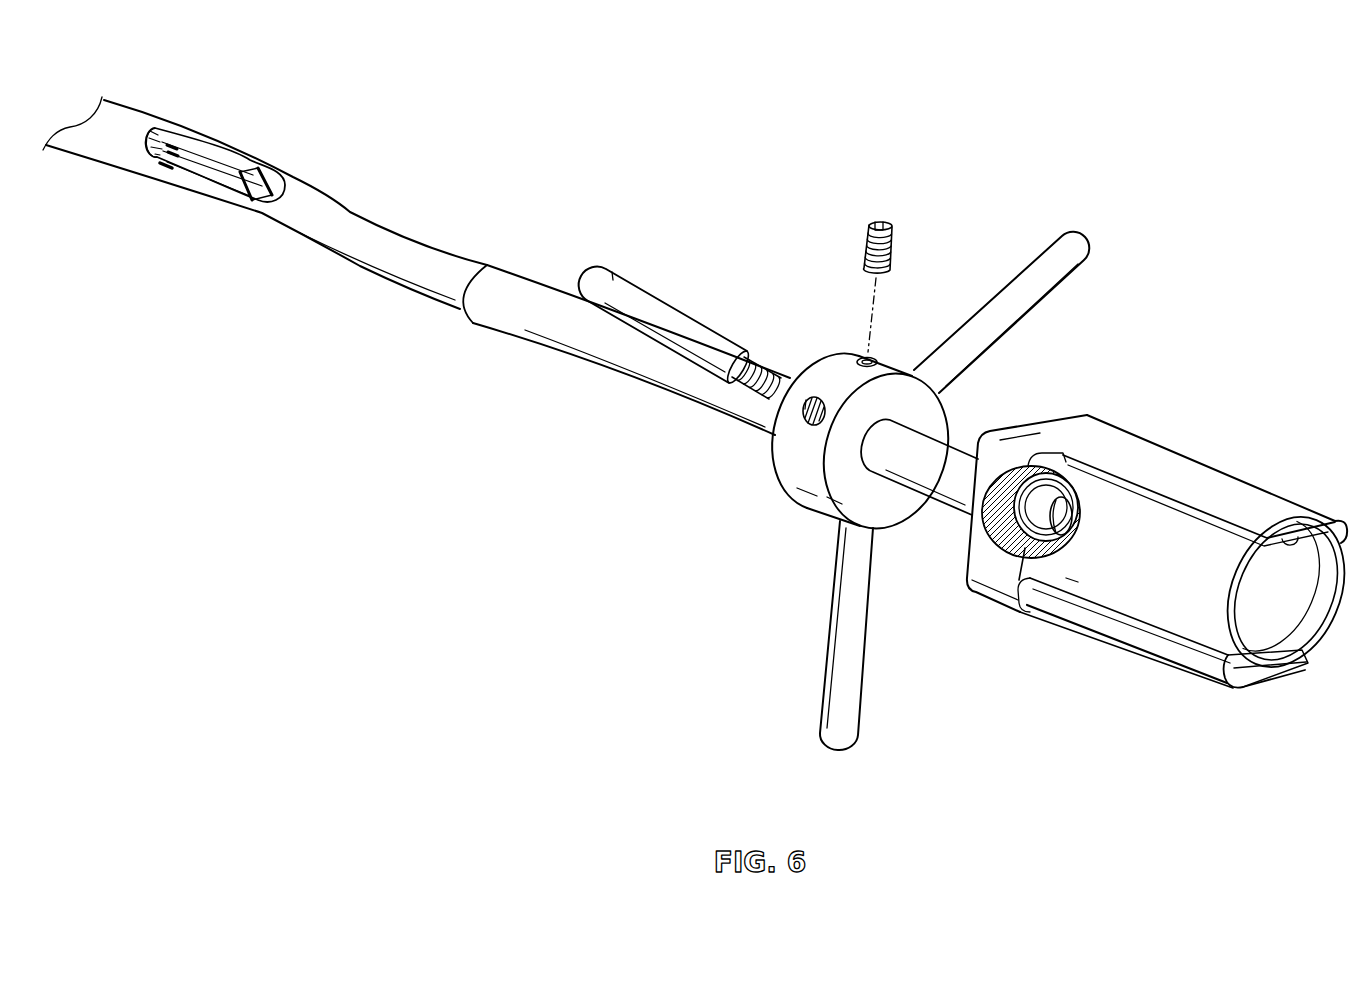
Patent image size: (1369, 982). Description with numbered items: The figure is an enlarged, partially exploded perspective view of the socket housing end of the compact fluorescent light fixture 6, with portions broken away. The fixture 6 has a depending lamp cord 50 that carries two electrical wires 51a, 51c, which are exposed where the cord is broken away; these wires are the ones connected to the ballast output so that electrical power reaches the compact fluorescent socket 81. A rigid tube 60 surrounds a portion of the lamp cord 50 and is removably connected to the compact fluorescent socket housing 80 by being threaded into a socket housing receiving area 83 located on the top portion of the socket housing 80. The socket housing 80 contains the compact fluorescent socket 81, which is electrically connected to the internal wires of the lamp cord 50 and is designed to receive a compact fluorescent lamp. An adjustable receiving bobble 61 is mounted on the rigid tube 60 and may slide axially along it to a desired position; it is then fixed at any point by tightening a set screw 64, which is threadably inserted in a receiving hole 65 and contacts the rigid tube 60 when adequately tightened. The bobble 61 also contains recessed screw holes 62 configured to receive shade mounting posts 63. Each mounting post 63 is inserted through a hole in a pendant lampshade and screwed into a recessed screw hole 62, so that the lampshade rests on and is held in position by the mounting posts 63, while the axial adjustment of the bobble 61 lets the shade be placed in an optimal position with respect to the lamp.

The compact fluorescent light fixture 6 is at (919, 80).
The lamp cord 50 is at (265, 189).
The electrical wire 51a is at (163, 167).
The electrical wire 51c is at (168, 148).
The rigid tube 60 is at (511, 283).
The adjustable receiving bobble 61 is at (821, 413).
The recessed screw holes 62 is at (800, 413).
The shade mounting posts 63 is at (647, 297).
The set screw 64 is at (893, 243).
The receiving hole 65 is at (864, 353).
The compact fluorescent socket housing 80 is at (1165, 511).
The compact fluorescent socket 81 is at (1278, 606).
The socket housing receiving area 83 is at (1077, 507).